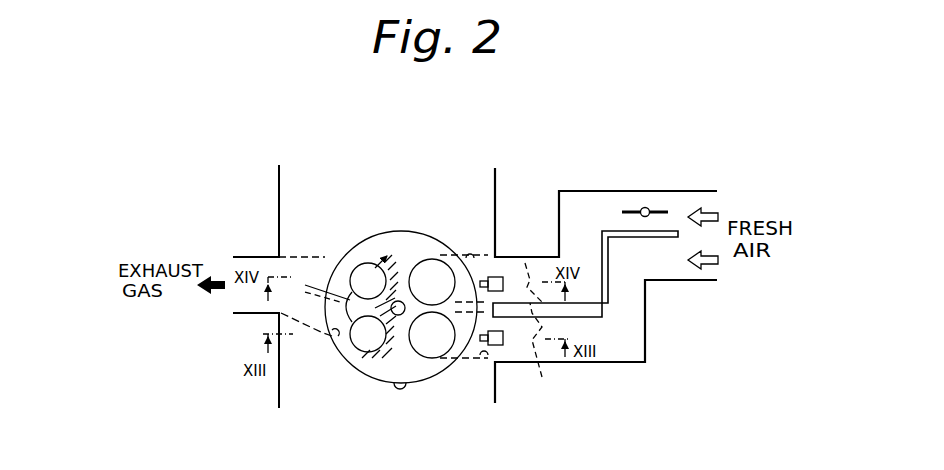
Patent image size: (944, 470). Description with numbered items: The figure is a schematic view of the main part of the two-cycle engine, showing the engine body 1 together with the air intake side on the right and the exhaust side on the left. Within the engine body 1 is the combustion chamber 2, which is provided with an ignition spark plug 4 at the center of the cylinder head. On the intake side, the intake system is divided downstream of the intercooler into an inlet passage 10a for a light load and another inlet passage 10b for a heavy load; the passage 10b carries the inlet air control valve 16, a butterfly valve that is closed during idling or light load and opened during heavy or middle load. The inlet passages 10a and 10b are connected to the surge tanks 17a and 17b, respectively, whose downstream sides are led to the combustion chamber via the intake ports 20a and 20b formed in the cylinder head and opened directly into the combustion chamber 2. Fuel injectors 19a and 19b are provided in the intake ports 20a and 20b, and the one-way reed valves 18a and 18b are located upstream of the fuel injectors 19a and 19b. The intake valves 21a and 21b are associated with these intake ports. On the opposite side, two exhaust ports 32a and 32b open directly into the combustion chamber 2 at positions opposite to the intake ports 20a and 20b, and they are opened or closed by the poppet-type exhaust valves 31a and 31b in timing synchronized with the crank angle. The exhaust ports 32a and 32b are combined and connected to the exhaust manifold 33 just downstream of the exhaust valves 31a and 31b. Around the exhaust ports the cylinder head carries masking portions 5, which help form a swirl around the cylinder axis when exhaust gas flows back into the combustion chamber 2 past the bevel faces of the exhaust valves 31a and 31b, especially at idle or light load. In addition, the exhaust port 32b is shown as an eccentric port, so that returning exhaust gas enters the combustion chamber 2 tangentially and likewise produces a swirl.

The engine body 1 is at (377, 186).
The combustion chamber 2 is at (388, 384).
The ignition spark plug 4 is at (399, 300).
The maskings 5 is at (365, 365).
The inlet passage for a light load 10a is at (628, 365).
The inlet passage for a heavy load 10b is at (608, 189).
The inlet air control valve 16 is at (640, 208).
The surge tank 17a is at (648, 308).
The surge tank 17b is at (577, 203).
The reed valve 18a is at (542, 377).
The reed valve 18b is at (525, 263).
The fuel injector 19a is at (501, 346).
The fuel injector 19b is at (491, 277).
The intake port 20a is at (486, 362).
The intake port 20b is at (456, 254).
The intake valve 21a is at (432, 358).
The intake valve 21b is at (425, 303).
The exhaust valve 31a is at (352, 349).
The exhaust valve 31b is at (364, 263).
The exhaust port 32a is at (323, 335).
The exhaust port 32b is at (323, 263).
The exhaust manifold 33 is at (233, 313).